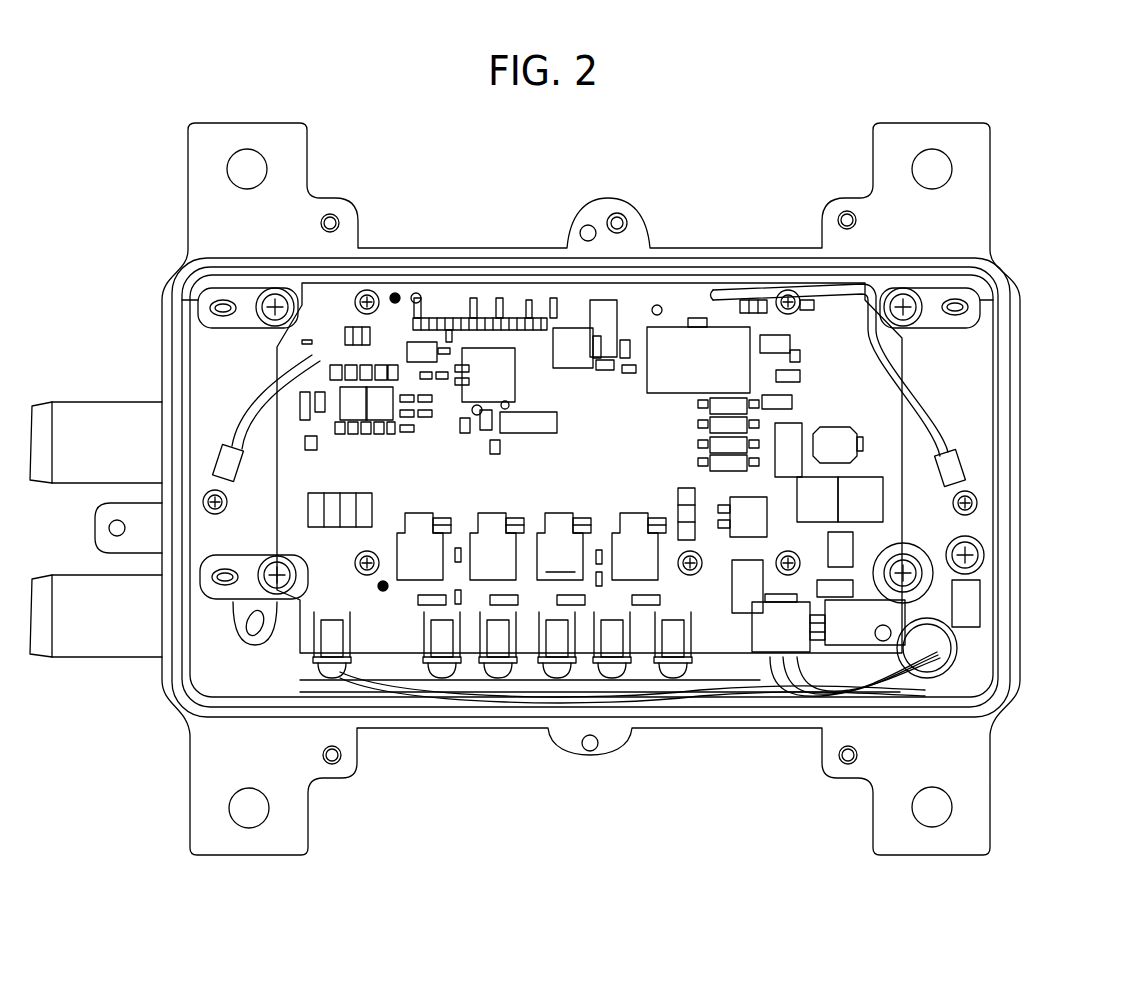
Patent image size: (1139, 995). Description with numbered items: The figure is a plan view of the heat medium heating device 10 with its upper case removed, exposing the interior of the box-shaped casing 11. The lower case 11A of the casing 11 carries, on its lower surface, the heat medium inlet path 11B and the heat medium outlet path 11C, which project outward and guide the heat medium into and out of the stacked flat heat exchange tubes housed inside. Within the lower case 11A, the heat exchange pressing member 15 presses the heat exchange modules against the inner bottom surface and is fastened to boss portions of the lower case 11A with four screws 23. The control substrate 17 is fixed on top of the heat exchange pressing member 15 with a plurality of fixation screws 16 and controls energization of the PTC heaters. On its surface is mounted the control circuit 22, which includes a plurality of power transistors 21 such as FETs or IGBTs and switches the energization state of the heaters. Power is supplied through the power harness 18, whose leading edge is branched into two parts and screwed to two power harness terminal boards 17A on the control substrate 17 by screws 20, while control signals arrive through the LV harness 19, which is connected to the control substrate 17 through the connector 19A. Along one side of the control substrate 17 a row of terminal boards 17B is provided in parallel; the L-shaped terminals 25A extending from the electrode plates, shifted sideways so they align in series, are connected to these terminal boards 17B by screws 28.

The heat medium heating device 10 is at (639, 150).
The casing 11 is at (1020, 399).
The lower case 11A is at (1007, 587).
The heat medium inlet path 11B is at (80, 640).
The heat medium outlet path 11C is at (72, 417).
The heat exchange pressing member 15 is at (215, 340).
The fixation screw 16 is at (367, 291).
The control substrate 17 is at (483, 296).
The power harness terminal board 17A is at (328, 645).
The terminal board 17B is at (442, 650).
The power harness 18 is at (712, 692).
The LV harness 19 is at (877, 690).
The connector 19A is at (768, 628).
The screw 20 is at (330, 672).
The power transistor 21 is at (492, 540).
The control circuit 22 is at (677, 303).
The screw 23 is at (905, 289).
The terminal 25A is at (560, 662).
The screw 28 is at (500, 665).